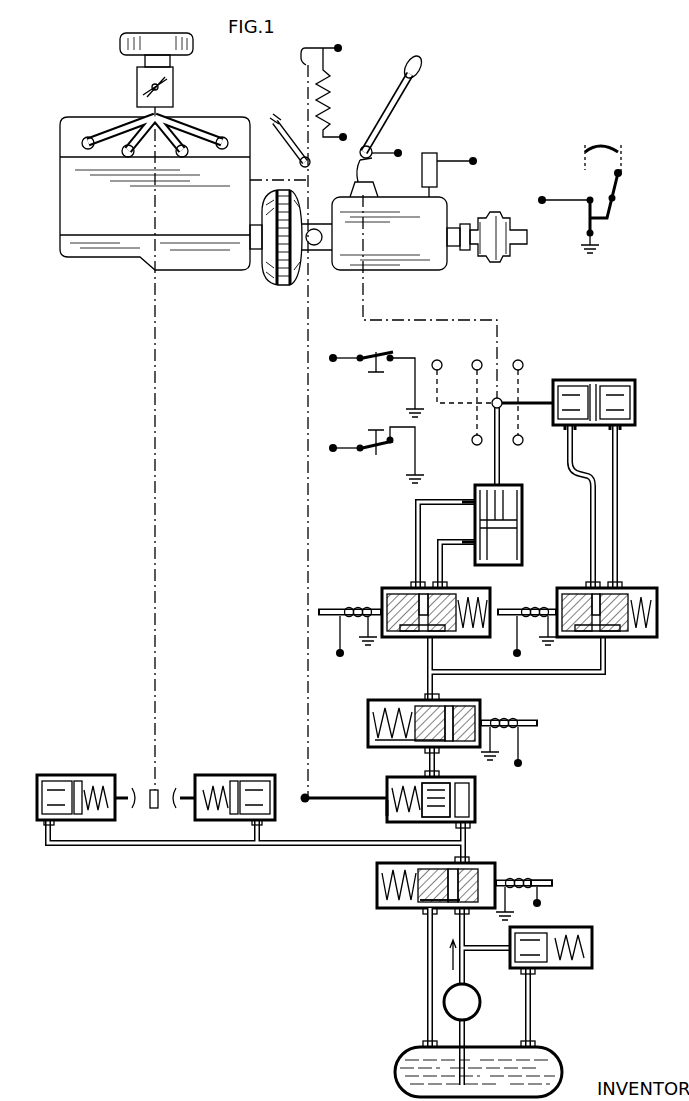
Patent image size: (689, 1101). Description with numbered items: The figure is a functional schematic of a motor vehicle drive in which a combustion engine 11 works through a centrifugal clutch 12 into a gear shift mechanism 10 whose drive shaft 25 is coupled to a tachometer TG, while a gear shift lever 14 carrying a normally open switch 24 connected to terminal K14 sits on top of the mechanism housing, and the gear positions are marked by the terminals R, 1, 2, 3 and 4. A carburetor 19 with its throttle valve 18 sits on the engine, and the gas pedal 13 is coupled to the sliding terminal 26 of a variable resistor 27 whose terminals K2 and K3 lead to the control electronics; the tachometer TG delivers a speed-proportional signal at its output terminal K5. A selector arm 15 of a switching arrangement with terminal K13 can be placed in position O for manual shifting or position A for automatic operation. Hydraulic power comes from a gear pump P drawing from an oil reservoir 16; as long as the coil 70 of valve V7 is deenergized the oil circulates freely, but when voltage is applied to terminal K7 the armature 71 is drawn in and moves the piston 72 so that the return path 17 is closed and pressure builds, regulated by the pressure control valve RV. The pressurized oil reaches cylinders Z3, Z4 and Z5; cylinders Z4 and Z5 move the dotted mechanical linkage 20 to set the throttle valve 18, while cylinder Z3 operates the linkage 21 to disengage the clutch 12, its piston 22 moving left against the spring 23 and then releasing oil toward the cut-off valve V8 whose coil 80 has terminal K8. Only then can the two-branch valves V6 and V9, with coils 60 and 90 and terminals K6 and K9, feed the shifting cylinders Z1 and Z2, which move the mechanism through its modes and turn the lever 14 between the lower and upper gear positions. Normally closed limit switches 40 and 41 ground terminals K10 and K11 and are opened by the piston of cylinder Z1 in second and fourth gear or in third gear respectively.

The gear shift mechanism 10 is at (447, 270).
The combustion engine 11 is at (200, 262).
The centrifugal clutch 12 is at (273, 285).
The gas pedal 13 is at (275, 118).
The gear shift lever 14 is at (410, 88).
The selector arm 15 is at (623, 192).
The oil reservoir 16 is at (562, 1070).
The return path 17 is at (430, 995).
The throttle valve 18 is at (175, 81).
The carburetor 19 is at (137, 81).
The mechanical linkage 20 is at (152, 428).
The linkage 21 is at (307, 489).
The piston 22 is at (425, 783).
The spring 23 is at (388, 817).
The switch 24 is at (358, 155).
The drive shaft 25 is at (470, 222).
The sliding terminal 26 is at (313, 100).
The variable resistor 27 is at (331, 91).
The limit switch 40 is at (376, 455).
The limit switch 41 is at (375, 352).
The magnetic coil 60 is at (350, 606).
The coil 70 is at (520, 878).
The armature 71 is at (555, 884).
The piston 72 is at (425, 908).
The electromagnetic coil 80 is at (512, 717).
The magnetic coil 90 is at (532, 606).
The terminal K2 is at (341, 46).
The terminal K3 is at (350, 123).
The output terminal K5 is at (476, 160).
The terminal K6 is at (340, 657).
The terminal K7 is at (541, 904).
The terminal K8 is at (522, 762).
The terminal K9 is at (514, 653).
The terminal K10 is at (333, 445).
The terminal K11 is at (333, 355).
The terminal K13 is at (542, 196).
The terminal K14 is at (398, 149).
The tachometer TG is at (437, 156).
The hydraulic shifting cylinder Z1 is at (522, 540).
The hydraulic cylinder Z2 is at (635, 395).
The hydraulic cylinder Z3 is at (476, 800).
The hydraulic cylinder Z4 is at (68, 775).
The hydraulic cylinder Z5 is at (235, 775).
The electromagnetically controlled valve V6 is at (396, 588).
The electromagnetically controlled valve V7 is at (387, 908).
The cut-off valve V8 is at (393, 700).
The electromagnetically controlled valve V9 is at (640, 588).
The pressure control valve RV is at (545, 968).
The gear pump P is at (462, 980).
The position O is at (585, 131).
The position A is at (620, 131).
The terminal R is at (452, 369).
The terminal 1 is at (476, 385).
The terminal 2 is at (476, 454).
The terminal 3 is at (517, 385).
The terminal 4 is at (517, 454).